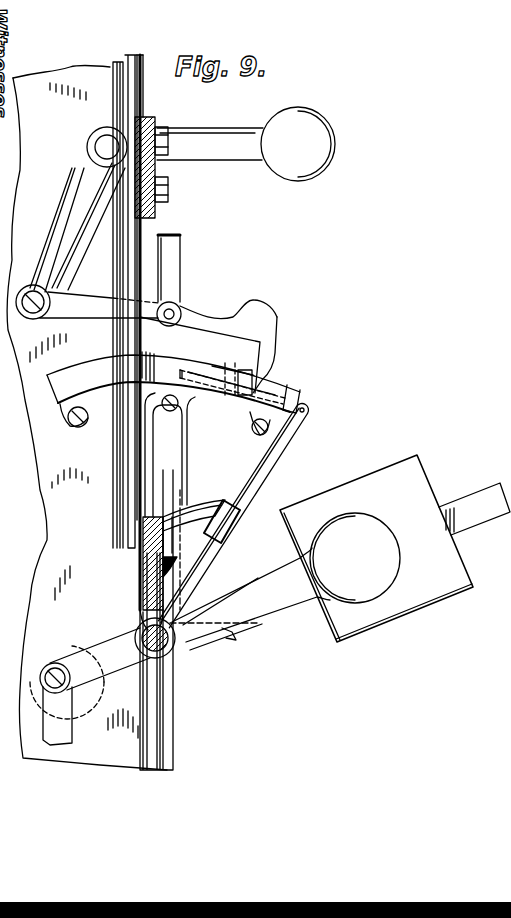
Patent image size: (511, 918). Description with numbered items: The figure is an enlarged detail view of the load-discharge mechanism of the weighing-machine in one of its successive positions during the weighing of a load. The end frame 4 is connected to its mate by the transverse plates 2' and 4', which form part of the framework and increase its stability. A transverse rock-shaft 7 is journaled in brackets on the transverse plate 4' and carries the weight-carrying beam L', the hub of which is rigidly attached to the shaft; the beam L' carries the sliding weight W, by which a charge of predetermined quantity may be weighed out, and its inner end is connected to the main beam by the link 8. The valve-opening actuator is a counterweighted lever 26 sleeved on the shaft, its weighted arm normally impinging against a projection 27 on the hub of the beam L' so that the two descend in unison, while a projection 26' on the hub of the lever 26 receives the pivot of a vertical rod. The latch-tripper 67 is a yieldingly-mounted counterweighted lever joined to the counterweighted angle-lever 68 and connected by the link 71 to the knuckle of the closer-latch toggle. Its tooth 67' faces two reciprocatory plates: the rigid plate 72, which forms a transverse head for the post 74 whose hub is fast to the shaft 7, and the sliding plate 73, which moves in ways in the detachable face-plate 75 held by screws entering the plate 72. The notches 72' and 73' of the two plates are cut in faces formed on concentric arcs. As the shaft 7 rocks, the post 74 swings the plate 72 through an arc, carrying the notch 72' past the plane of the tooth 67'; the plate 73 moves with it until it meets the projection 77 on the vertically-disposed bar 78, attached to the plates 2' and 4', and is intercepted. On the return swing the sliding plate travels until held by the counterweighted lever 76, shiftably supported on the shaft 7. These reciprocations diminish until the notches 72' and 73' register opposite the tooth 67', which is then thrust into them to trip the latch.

The transverse plate 2' is at (156, 157).
The counterweighted angle-lever 68 is at (72, 200).
The vertically-disposed bar 78 is at (128, 263).
The link 71 is at (172, 258).
The latch-tripper 67 is at (208, 336).
The tooth 67' is at (283, 355).
The projection 77 is at (163, 370).
The notch 72' is at (232, 369).
The sliding plate 73 is at (248, 384).
The rigid plate 72 is at (311, 396).
The notch 73' is at (231, 401).
The detachable face-plate 75 is at (253, 410).
The post 74 is at (163, 460).
The counterweighted lever 76 is at (260, 482).
The sliding weight W is at (376, 548).
The weight-carrying beam L' is at (474, 502).
The counterweighted lever 26 is at (251, 598).
The transverse plate 4' is at (129, 563).
The projection 26' is at (95, 655).
The transverse rock-shaft 7 is at (143, 633).
The projection 27 is at (228, 640).
The end frame 4 is at (167, 620).
The link 8 is at (63, 730).